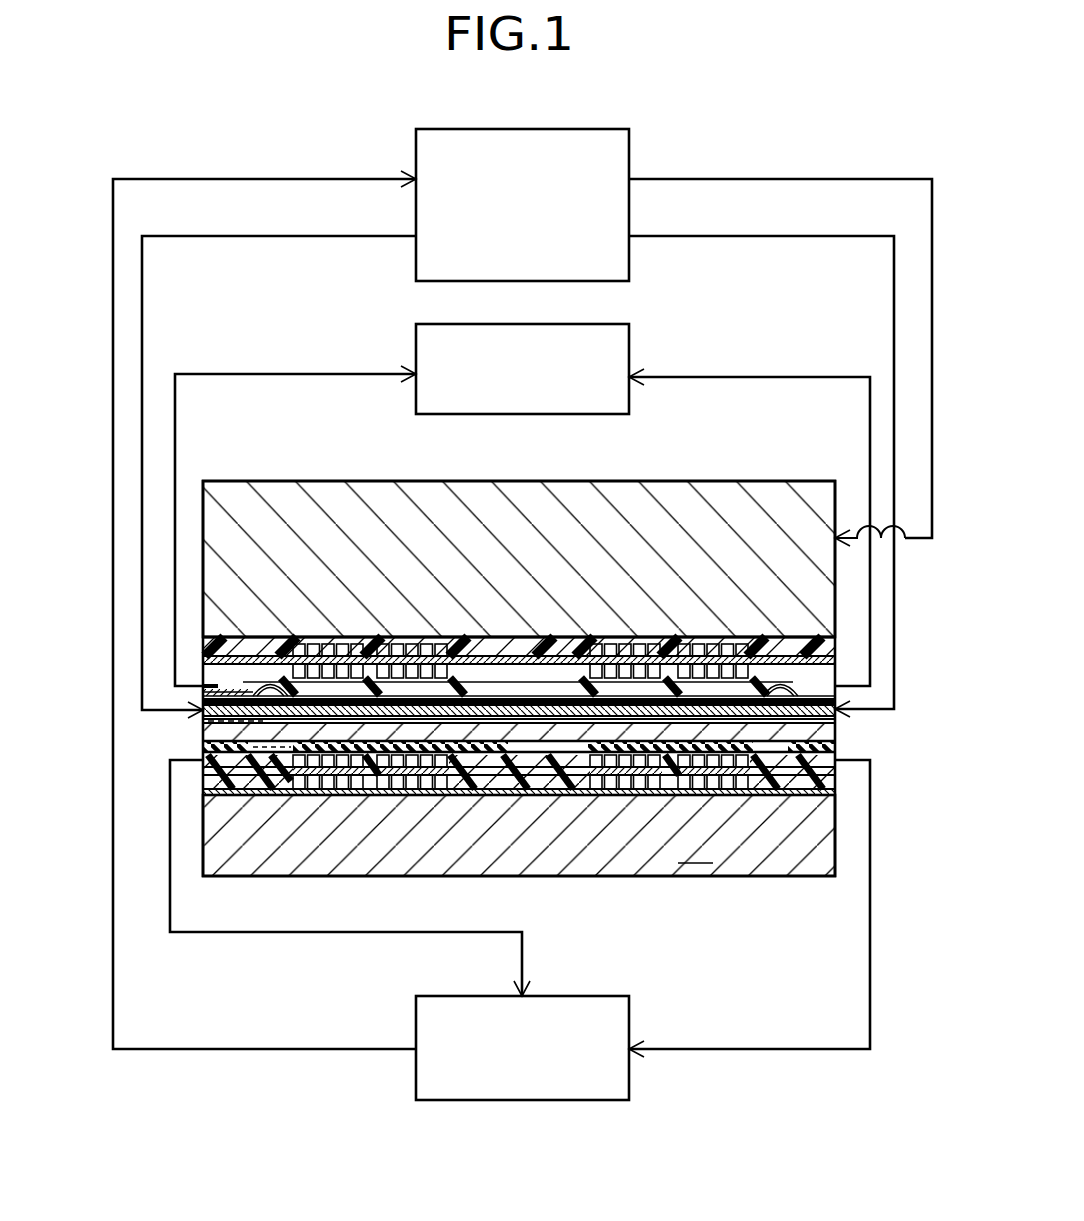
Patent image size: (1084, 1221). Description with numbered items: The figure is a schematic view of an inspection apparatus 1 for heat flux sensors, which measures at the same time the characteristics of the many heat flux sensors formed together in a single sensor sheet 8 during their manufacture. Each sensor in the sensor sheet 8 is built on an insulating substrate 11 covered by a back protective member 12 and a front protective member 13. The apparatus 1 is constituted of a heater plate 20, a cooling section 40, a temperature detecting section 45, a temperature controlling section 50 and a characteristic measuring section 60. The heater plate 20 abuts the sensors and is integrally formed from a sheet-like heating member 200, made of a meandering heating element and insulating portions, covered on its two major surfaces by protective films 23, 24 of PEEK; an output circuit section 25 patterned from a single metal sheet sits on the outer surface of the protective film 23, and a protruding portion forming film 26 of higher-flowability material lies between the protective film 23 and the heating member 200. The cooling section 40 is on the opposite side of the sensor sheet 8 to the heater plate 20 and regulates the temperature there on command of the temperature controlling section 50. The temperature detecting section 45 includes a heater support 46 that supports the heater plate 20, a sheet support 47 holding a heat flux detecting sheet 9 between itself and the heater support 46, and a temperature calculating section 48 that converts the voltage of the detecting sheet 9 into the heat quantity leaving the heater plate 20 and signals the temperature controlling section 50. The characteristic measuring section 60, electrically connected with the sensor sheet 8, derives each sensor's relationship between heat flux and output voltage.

The inspection apparatus 1 is at (705, 136).
The sensor sheet 8 is at (458, 633).
The heat flux detecting sheet 9 is at (746, 792).
The insulating substrate 11 is at (832, 676).
The back protective member 12 is at (832, 656).
The front protective member 13 is at (832, 690).
The heater plate 20 is at (198, 717).
The protective film 23 is at (200, 690).
The protective film 24 is at (200, 755).
The output circuit section 25 is at (200, 681).
The protruding portion forming film 26 is at (200, 697).
The cooling section 40 is at (292, 500).
The temperature detecting section 45 is at (615, 878).
The heater support 46 is at (832, 730).
The sheet support 47 is at (690, 860).
The temperature calculating section 48 is at (610, 1072).
The temperature controlling section 50 is at (607, 253).
The characteristic measuring section 60 is at (607, 388).
The sheet-like heating member 200 is at (200, 719).